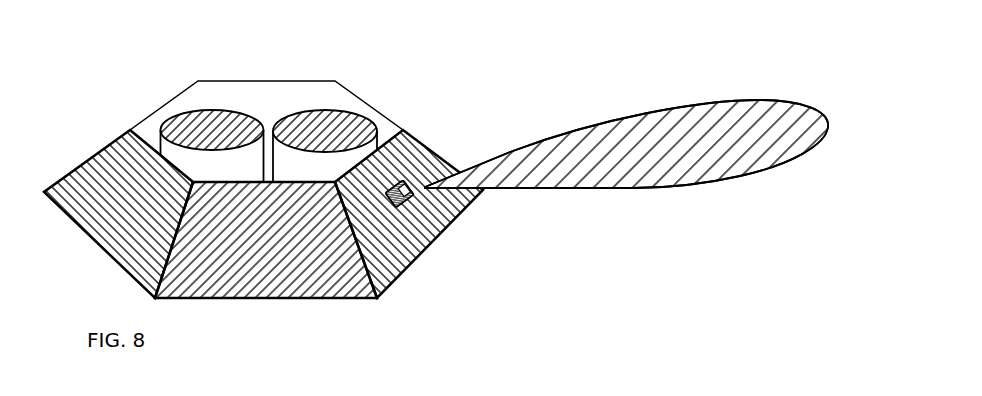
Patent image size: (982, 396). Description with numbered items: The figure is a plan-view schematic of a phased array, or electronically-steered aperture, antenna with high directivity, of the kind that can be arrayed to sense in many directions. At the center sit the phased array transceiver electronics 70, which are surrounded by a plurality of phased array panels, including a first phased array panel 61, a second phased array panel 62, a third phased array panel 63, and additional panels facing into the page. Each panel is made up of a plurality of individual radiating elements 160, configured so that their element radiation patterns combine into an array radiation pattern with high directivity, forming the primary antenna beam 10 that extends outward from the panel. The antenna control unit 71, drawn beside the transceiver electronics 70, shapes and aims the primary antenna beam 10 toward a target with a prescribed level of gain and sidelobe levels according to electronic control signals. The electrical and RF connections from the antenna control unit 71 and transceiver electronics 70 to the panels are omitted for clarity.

The primary antenna beam 10 is at (610, 137).
The first phased array panel 61 is at (410, 142).
The second phased array panel 62 is at (350, 287).
The third phased array panel 63 is at (103, 225).
The phased array transceiver electronics 70 is at (208, 108).
The antenna control unit 71 is at (337, 110).
The individual radiating elements 160 is at (410, 203).